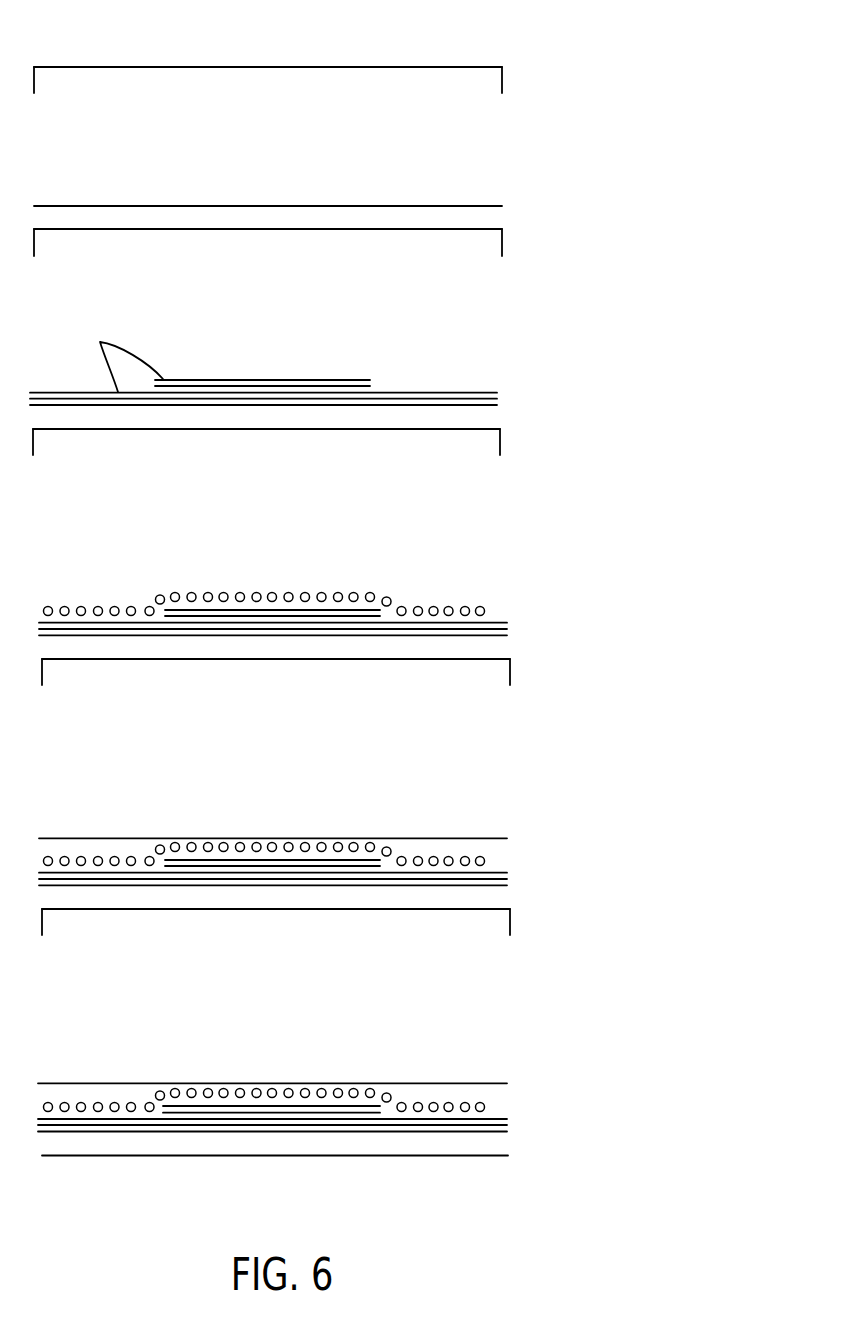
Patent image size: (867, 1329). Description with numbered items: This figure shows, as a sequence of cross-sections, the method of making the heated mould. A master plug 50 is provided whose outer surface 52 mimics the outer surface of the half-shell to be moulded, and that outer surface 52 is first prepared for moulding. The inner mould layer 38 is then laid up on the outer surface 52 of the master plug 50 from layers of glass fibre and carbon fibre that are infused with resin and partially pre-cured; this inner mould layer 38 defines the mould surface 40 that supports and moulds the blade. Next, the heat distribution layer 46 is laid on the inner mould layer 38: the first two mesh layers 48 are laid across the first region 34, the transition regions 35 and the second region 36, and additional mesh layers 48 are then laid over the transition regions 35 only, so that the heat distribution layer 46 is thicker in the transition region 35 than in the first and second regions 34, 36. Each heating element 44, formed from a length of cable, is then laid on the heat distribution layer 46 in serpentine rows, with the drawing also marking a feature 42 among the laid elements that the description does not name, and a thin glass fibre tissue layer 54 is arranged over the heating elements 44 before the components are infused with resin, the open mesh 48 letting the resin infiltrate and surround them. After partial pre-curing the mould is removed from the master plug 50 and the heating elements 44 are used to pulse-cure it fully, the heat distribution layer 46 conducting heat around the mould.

The first region 34 is at (450, 438).
The transition region 35 is at (270, 438).
The second region 36 is at (71, 438).
The inner mould layer 38 is at (458, 213).
The mould surface 40 is at (245, 1158).
The lower bead row 42 is at (92, 848).
The electrical heating elements 44 is at (207, 597).
The heat distribution layer 46 is at (287, 390).
The mesh layers 48 is at (228, 1105).
The master plug 50 is at (427, 75).
The outer surface 52 is at (295, 65).
The glass fibre tissue layer 54 is at (397, 837).